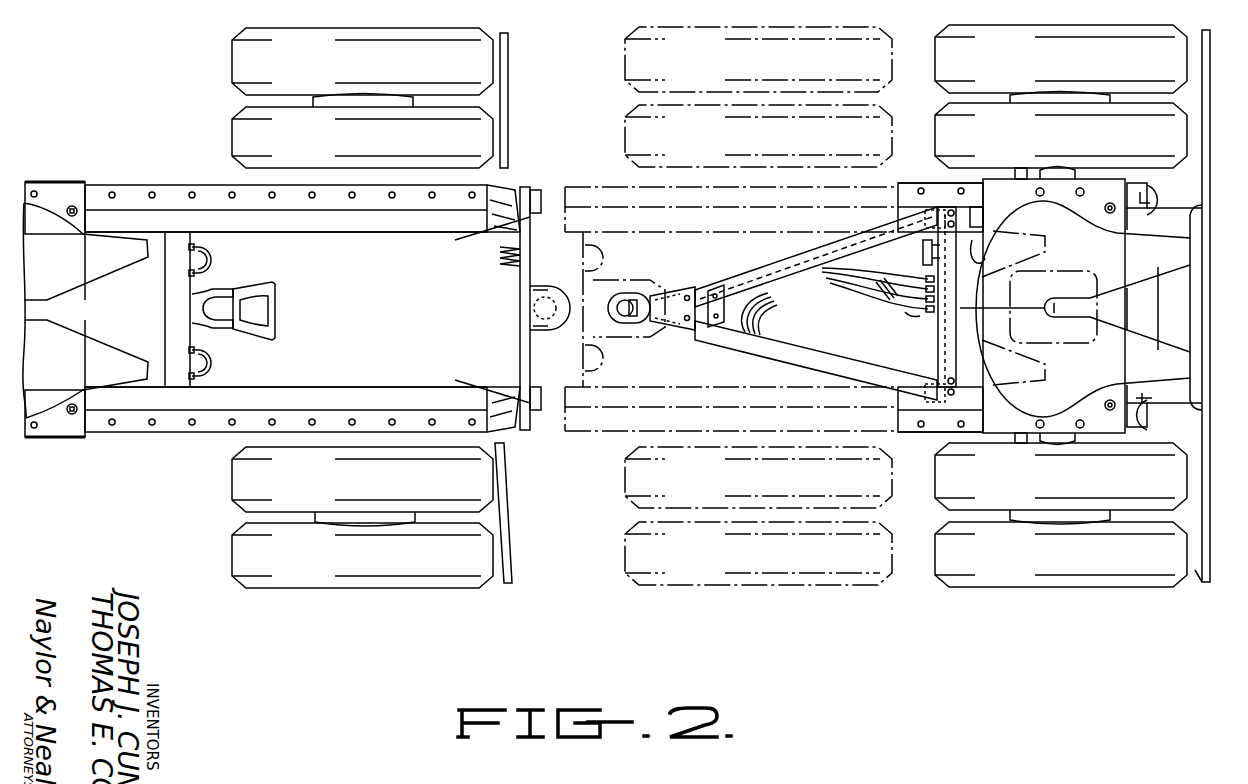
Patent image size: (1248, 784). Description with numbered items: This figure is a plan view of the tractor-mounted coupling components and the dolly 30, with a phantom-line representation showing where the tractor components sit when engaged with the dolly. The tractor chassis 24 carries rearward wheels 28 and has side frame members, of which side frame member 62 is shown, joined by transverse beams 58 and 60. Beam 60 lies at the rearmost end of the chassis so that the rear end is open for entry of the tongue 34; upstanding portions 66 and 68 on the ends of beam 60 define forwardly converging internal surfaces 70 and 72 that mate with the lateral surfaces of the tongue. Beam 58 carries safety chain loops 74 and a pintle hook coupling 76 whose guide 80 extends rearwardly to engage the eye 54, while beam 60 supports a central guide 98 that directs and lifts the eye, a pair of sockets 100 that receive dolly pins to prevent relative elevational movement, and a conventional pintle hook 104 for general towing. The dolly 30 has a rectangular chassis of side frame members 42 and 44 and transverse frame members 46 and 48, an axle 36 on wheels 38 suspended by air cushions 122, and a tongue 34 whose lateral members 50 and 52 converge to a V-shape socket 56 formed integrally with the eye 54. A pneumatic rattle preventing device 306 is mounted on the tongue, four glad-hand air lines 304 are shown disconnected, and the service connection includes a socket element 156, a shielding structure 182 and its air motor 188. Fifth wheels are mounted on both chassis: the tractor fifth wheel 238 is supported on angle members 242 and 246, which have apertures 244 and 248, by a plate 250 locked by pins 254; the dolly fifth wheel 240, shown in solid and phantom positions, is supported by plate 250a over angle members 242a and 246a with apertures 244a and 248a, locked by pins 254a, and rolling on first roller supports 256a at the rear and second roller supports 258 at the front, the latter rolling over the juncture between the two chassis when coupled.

The chassis or frame 24 is at (143, 182).
The rearward wheels 28 is at (238, 113).
The dolly 30 is at (907, 306).
The tongue 34 is at (776, 304).
The axle 36 is at (1066, 174).
The wheels 38 is at (940, 107).
The side frame member 42 is at (1142, 398).
The side frame member 44 is at (1142, 218).
The transverse frame member 46 is at (940, 343).
The transverse frame member 48 is at (1206, 308).
The lateral member 50 is at (760, 345).
The lateral member 52 is at (768, 276).
The eye 54 is at (617, 294).
The V-shape socket 56 is at (681, 289).
The transverse beam 58 is at (178, 240).
The transverse beam 60 is at (521, 347).
The side frame member 62 is at (305, 394).
The upstanding portion 66 is at (490, 447).
The upstanding portion 68 is at (502, 212).
The internal surface 70 is at (522, 513).
The internal surface 72 is at (507, 222).
The safety chain loops 74 is at (217, 257).
The pintle hook coupling 76 is at (240, 289).
The guide 80 is at (263, 340).
The guide 98 is at (542, 335).
The sockets 100 is at (538, 213).
The pintle hook 104 is at (527, 302).
The air cushion or bag 122 is at (1175, 190).
The socket element 156 is at (524, 258).
The shielding structure 182 is at (921, 240).
The air motor 188 is at (968, 256).
The fifth wheel 238 is at (47, 301).
The fifth wheel 240 is at (1048, 322).
The angle member 242 is at (175, 431).
The apertures 244 is at (232, 425).
The angle member 246 is at (291, 197).
The apertures 248 is at (354, 193).
The plate 250 is at (55, 182).
The pins 254 is at (43, 440).
The second roller supports 258 is at (998, 205).
The angle member 242a is at (900, 430).
The apertures 244a is at (922, 428).
The angle member 246a is at (898, 183).
The apertures 248a is at (922, 188).
The plate 250a is at (1000, 188).
The pins 254a is at (1081, 430).
The first roller supports 256a is at (1112, 204).
The air lines 304 is at (878, 294).
The rattle preventing device 306 is at (766, 280).